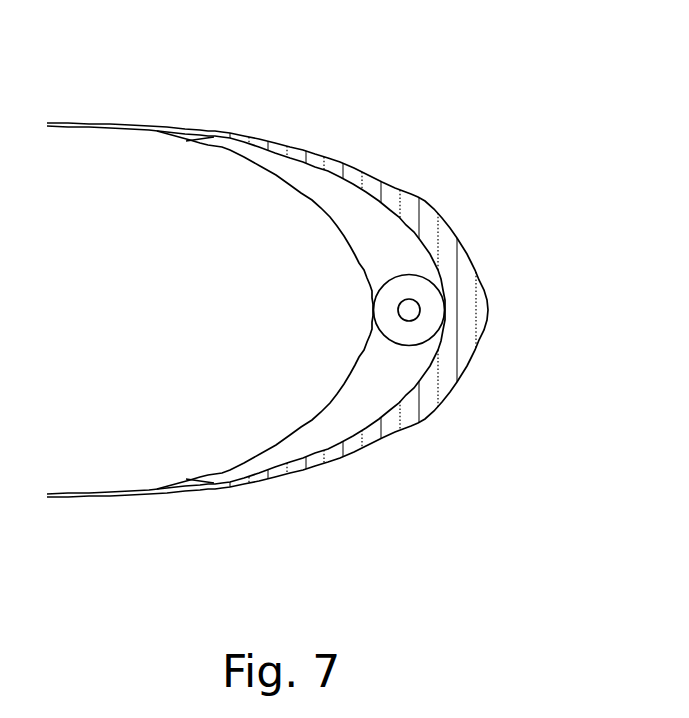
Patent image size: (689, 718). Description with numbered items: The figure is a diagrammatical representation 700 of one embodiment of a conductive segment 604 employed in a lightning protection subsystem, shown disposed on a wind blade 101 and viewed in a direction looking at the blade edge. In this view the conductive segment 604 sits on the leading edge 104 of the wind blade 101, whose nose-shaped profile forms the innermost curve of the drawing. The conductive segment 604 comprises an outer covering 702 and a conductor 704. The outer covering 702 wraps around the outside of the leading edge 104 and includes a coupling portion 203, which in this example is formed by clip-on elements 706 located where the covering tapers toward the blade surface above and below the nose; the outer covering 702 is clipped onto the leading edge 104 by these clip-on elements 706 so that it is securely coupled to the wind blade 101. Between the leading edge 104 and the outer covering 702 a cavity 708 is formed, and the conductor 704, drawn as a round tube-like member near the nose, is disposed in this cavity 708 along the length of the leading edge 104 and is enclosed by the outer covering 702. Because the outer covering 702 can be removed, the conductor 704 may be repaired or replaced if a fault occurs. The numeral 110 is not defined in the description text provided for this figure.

The diagrammatical representation 700 is at (567, 148).
The wind blade 101 is at (170, 204).
The leading edge 104 is at (333, 218).
The outer skin surface 110 is at (416, 426).
The coupling portion 203 is at (368, 410).
The conductive segment 604 is at (496, 284).
The outer covering 702 is at (390, 197).
The conductor 704 is at (403, 332).
The clip-on elements 706 is at (180, 130).
The cavity 708 is at (310, 180).